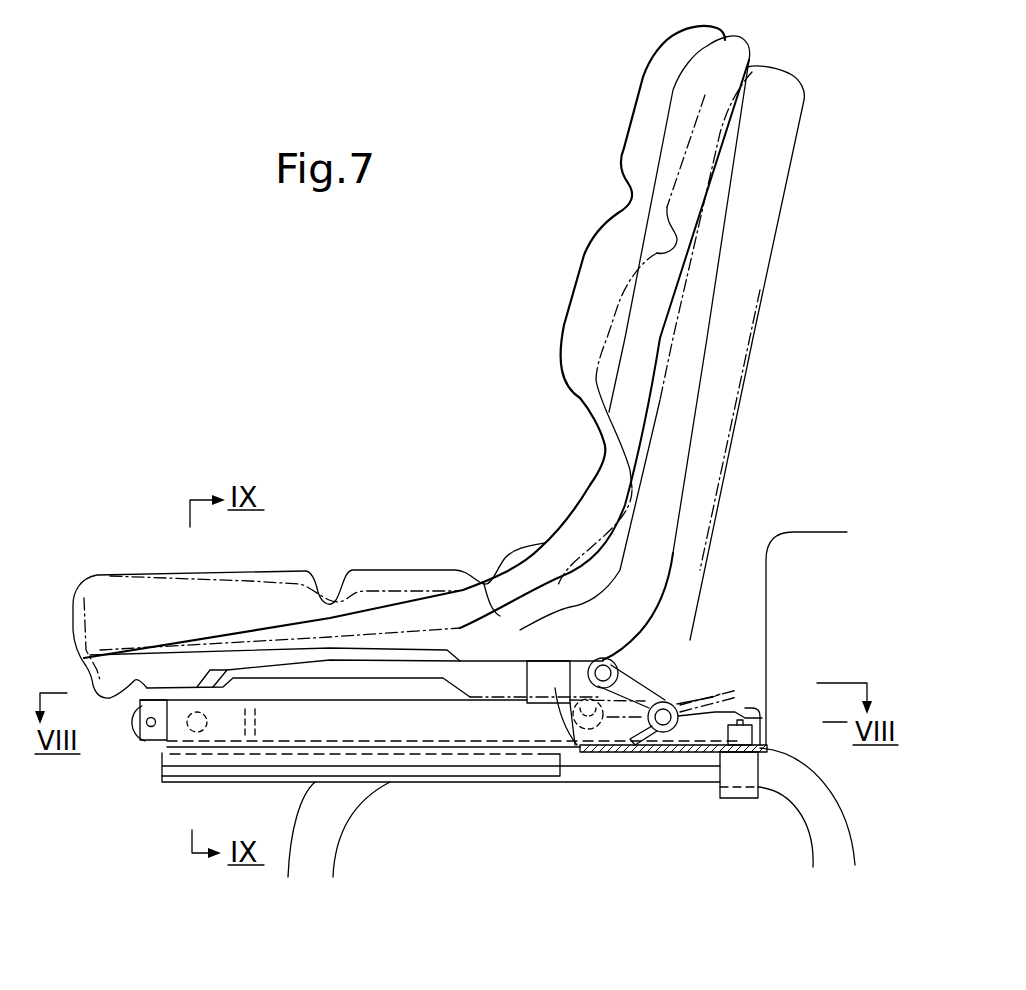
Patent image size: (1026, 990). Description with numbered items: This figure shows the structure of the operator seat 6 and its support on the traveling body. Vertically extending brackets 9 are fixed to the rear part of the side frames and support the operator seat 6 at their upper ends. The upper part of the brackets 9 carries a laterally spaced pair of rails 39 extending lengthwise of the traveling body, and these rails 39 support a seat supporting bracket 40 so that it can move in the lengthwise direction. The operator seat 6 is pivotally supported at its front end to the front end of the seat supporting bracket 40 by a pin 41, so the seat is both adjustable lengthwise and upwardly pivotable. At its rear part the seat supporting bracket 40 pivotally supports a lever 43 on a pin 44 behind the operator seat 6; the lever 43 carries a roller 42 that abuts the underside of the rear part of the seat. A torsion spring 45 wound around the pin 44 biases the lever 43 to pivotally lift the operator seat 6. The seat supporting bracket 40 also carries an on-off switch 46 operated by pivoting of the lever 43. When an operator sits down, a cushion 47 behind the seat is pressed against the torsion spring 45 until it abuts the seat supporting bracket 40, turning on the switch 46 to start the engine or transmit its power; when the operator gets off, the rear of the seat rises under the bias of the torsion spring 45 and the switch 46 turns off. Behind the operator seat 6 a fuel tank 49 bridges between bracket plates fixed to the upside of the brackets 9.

The operator seat 6 is at (587, 469).
The brackets 9 is at (830, 812).
The rails 39 is at (190, 782).
The seat supporting bracket 40 is at (405, 718).
The pin 41 is at (143, 739).
The roller 42 is at (603, 657).
The lever 43 is at (632, 685).
The pin 44 is at (667, 733).
The torsion spring 45 is at (680, 733).
The on-off switch 46 is at (771, 716).
The cushion 47 is at (530, 663).
The fuel tank 49 is at (787, 550).